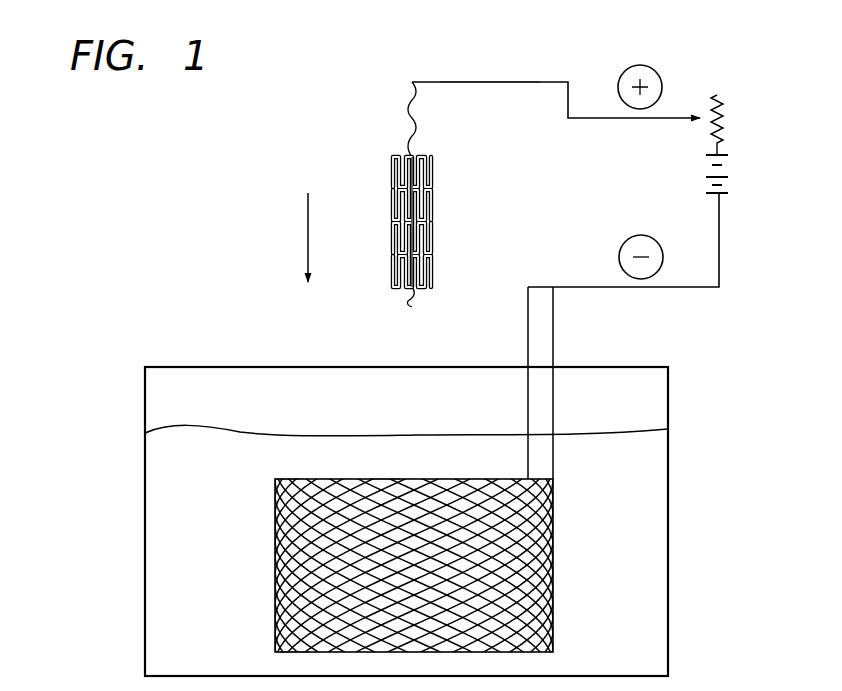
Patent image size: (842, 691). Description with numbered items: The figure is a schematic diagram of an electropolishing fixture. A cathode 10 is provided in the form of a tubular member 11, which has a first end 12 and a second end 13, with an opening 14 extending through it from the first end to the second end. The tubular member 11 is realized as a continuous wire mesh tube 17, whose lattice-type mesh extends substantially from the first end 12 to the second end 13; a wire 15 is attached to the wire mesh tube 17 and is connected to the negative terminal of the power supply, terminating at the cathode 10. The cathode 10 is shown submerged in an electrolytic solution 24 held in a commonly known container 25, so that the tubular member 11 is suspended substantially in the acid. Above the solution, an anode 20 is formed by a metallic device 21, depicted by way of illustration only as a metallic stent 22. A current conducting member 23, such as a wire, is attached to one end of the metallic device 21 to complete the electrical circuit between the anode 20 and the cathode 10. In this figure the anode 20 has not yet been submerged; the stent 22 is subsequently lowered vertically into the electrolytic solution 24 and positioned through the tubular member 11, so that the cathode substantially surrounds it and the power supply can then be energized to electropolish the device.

The cathode 10 is at (301, 428).
The tubular member 11 is at (275, 551).
The first end 12 is at (283, 478).
The second end 13 is at (292, 652).
The opening 14 is at (385, 478).
The wire 15 is at (672, 287).
The wire mesh tube 17 is at (553, 553).
The anode 20 is at (401, 150).
The metallic device 21 is at (485, 221).
The metallic stent 22 is at (430, 265).
The current conducting member 23 is at (491, 81).
The electrolytic solution 24 is at (185, 425).
The container 25 is at (144, 522).